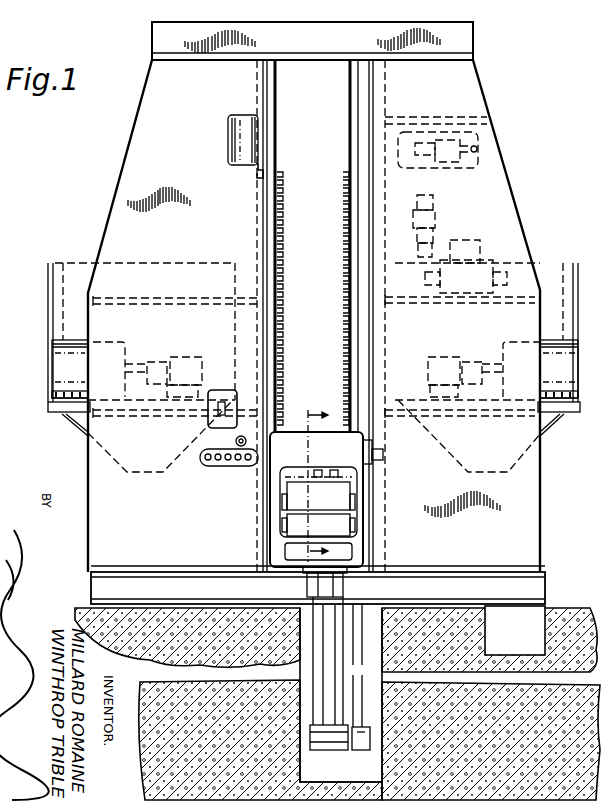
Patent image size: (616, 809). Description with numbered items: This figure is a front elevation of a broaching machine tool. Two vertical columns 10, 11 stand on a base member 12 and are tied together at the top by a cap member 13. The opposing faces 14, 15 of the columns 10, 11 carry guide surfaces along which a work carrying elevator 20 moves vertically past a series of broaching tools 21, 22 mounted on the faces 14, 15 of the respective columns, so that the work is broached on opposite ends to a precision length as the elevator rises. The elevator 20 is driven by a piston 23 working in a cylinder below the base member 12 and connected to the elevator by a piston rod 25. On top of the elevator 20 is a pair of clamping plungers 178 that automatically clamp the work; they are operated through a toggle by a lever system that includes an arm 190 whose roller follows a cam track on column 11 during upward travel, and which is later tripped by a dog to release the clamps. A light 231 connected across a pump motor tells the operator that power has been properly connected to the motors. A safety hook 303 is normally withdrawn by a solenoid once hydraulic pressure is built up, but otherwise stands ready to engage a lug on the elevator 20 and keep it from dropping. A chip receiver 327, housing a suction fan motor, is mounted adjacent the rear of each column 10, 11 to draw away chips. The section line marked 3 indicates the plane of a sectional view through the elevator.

The vertical column 10 is at (137, 143).
The vertical column 11 is at (500, 192).
The base member 12 is at (548, 591).
The cap member 13 is at (455, 46).
The opposing face of column 14 is at (278, 131).
The opposing face of column 15 is at (348, 144).
The work carrying elevator 20 is at (273, 462).
The broaching tools 21 is at (284, 299).
The broaching tools 22 is at (344, 318).
The piston 23 is at (322, 735).
The piston rod 25 is at (322, 646).
The clamping plunger 178 is at (334, 471).
The arm 190 is at (377, 448).
The light 231 is at (236, 441).
The safety hook 303 is at (255, 178).
The receiver 327 is at (85, 246).
The section line 3- 3 is at (315, 484).